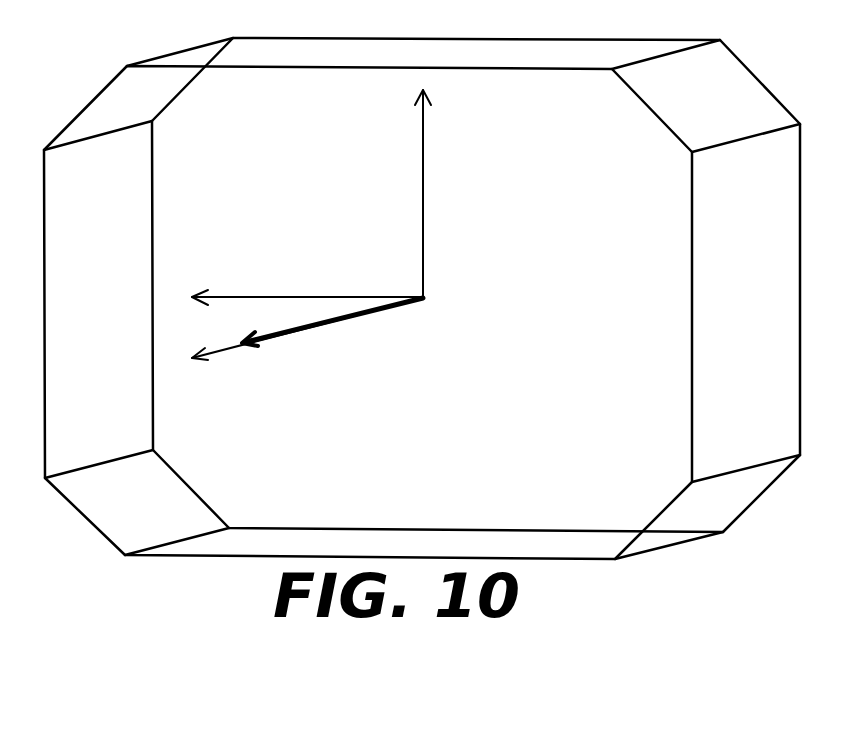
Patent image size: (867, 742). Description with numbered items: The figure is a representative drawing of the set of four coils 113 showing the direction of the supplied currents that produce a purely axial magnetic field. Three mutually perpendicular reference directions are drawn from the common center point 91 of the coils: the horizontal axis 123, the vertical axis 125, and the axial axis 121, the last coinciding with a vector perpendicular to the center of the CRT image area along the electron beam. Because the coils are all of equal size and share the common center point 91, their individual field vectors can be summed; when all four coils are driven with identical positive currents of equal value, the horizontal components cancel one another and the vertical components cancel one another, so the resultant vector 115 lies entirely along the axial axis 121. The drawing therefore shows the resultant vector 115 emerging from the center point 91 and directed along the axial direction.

The set of coils 113 is at (318, 30).
The vertical axis 125 is at (423, 135).
The horizontal axis 123 is at (230, 297).
The axial axis 121 is at (223, 350).
The resultant vector 115 is at (327, 322).
The common center point 91 is at (425, 300).